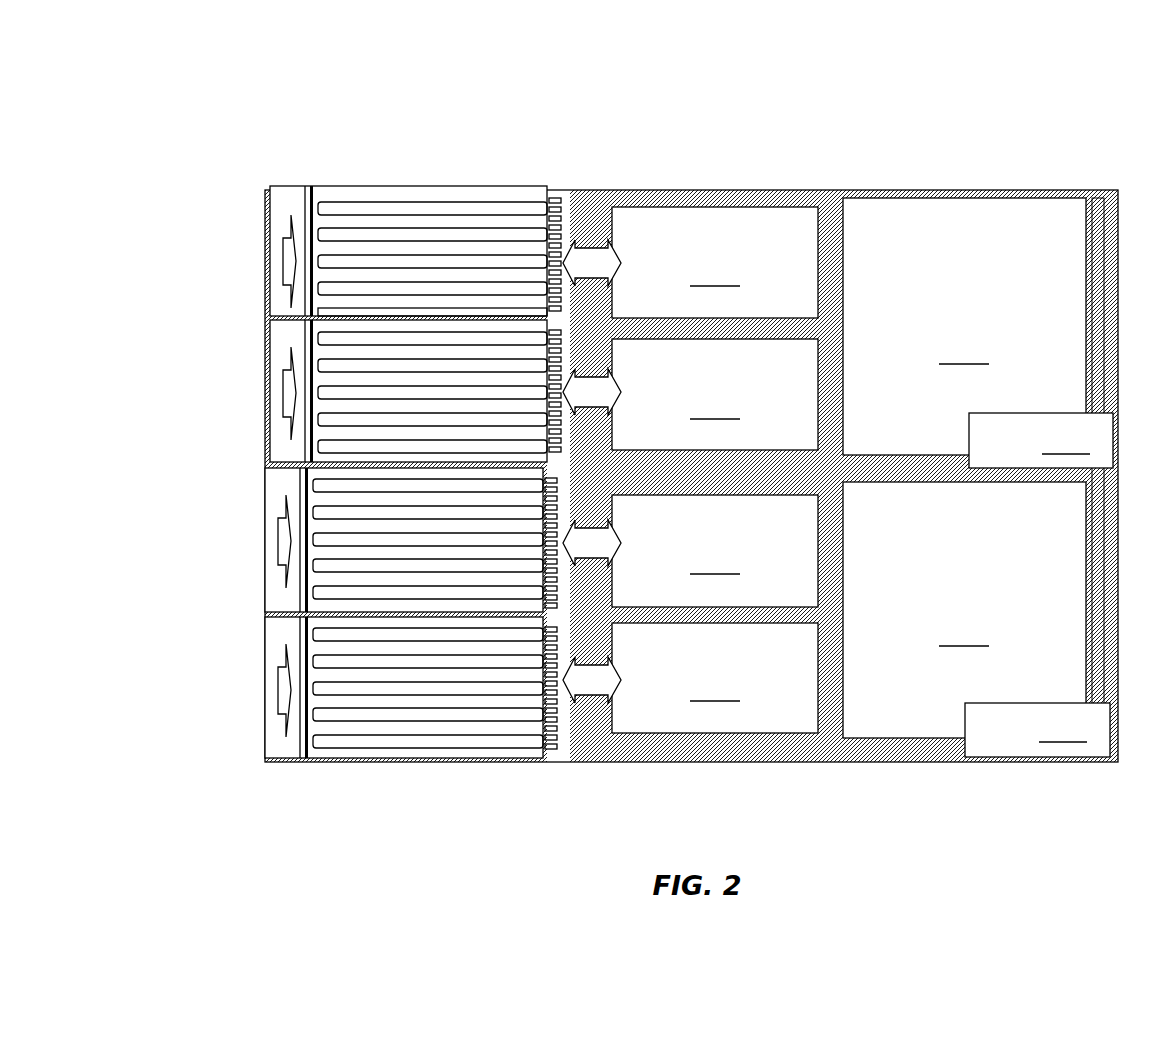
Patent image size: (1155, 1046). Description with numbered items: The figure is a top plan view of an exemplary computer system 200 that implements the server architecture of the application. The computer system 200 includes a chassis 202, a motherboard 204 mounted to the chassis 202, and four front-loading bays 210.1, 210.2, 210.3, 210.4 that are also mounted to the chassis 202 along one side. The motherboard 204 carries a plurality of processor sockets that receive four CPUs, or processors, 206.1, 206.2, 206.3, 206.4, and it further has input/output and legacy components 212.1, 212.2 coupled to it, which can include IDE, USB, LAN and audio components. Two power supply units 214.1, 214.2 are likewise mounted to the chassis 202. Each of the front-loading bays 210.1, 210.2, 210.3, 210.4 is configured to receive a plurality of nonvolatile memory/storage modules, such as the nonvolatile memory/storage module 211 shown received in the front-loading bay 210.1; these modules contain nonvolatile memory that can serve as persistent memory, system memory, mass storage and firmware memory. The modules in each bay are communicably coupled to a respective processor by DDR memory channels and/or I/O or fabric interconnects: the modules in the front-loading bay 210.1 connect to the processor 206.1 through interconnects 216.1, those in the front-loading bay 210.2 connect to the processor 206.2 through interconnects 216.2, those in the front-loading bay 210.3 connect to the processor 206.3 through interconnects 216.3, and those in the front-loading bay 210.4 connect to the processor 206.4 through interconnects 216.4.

The computer system 200 is at (336, 78).
The chassis 202 is at (927, 775).
The motherboard 204 is at (590, 744).
The CPU (processor) 206.1 is at (715, 262).
The CPU (processor) 206.2 is at (715, 394).
The CPU (processor) 206.3 is at (715, 551).
The CPU (processor) 206.4 is at (715, 678).
The front-loading bay 210.1 is at (374, 229).
The front-loading bay 210.2 is at (238, 401).
The front-loading bay 210.3 is at (238, 543).
The front-loading bay 210.4 is at (238, 684).
The nonvolatile memory/storage module 211 is at (414, 192).
The I/O and legacy components 212.1 is at (964, 326).
The I/O and legacy components 212.2 is at (964, 610).
The power supply unit 214.1 is at (1041, 440).
The power supply unit 214.2 is at (1037, 730).
The DDR memory channels and/or I/O or fabric interconnects 216.1 is at (609, 239).
The DDR memory channels and/or I/O or fabric interconnects 216.2 is at (609, 368).
The DDR memory channels and/or I/O or fabric interconnects 216.3 is at (609, 519).
The DDR memory channels and/or I/O or fabric interconnects 216.4 is at (609, 656).